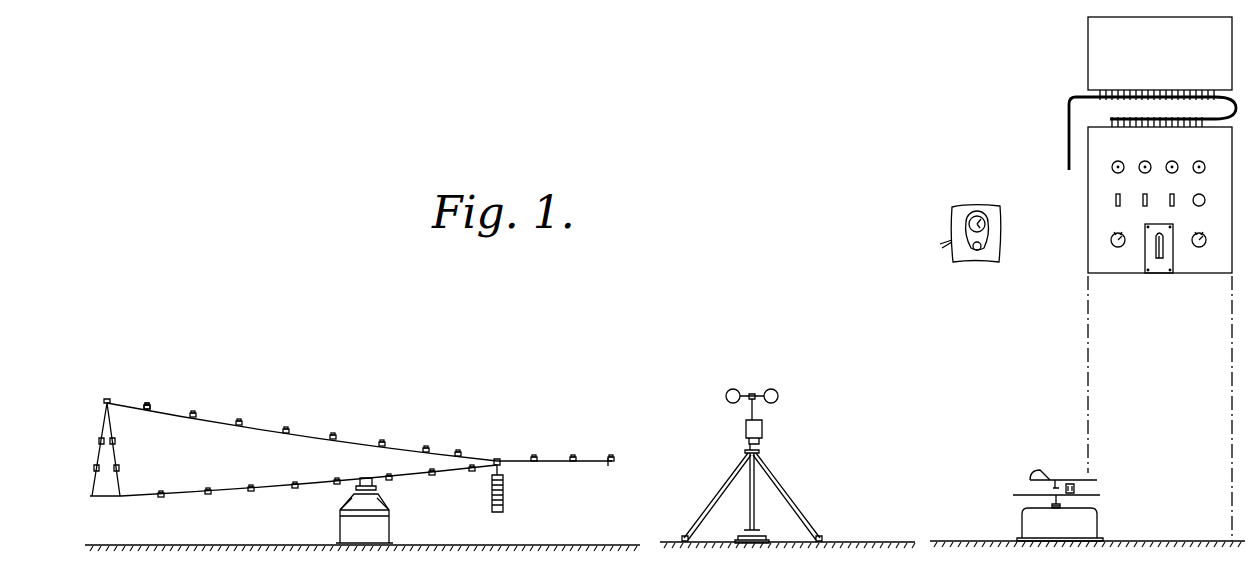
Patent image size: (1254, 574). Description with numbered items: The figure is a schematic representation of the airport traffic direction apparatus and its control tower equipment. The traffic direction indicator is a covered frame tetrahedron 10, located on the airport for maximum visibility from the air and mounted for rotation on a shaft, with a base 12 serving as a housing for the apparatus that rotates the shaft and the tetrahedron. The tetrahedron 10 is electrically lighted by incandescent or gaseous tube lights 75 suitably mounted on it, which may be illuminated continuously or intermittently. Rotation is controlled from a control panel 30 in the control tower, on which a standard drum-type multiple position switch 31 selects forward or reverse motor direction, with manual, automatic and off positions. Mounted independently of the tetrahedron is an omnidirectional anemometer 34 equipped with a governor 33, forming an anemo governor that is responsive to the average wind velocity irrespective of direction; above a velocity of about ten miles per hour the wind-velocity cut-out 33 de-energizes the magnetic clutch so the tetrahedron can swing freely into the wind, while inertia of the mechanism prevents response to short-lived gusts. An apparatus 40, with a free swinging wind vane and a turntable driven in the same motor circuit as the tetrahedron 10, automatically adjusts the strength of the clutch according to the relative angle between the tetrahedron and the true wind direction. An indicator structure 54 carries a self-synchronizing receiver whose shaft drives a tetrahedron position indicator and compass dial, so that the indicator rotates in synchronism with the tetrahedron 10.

The tetrahedron 10 is at (384, 417).
The base 12 is at (390, 528).
The control panel 30 is at (1079, 258).
The multiple position switch 31 is at (1165, 250).
The governor 33 is at (774, 440).
The anemometer 34 is at (776, 392).
The apparatus 40 is at (1115, 515).
The indicator structure 54 is at (1012, 220).
The lights 75 is at (148, 406).